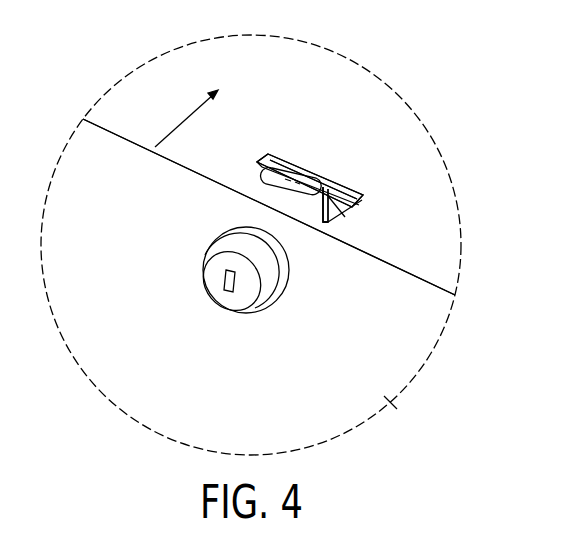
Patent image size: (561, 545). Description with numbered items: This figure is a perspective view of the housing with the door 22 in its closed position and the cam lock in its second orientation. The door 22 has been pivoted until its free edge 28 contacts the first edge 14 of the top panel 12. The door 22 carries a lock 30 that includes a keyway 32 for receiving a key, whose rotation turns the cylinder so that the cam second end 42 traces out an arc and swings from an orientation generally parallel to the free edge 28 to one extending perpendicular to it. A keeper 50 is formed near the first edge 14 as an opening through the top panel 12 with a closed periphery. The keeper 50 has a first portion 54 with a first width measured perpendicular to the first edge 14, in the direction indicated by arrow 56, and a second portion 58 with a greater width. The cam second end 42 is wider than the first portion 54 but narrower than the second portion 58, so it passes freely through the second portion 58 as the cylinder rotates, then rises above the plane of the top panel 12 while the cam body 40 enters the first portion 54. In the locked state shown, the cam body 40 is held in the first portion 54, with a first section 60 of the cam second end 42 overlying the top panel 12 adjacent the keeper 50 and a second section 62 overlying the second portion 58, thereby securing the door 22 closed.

The top panel 12 is at (452, 205).
The first edge 14 is at (380, 258).
The door 22 is at (390, 402).
The free edge 28 is at (410, 277).
The lock 30 is at (245, 335).
The keyway 32 is at (226, 277).
The cam body 40 is at (312, 213).
The cam second end 42 is at (310, 175).
The keeper 50 is at (325, 142).
The first portion 54 is at (275, 148).
The arrow 56 is at (173, 127).
The second portion 58 is at (355, 188).
The first section 60 is at (265, 178).
The second section 62 is at (335, 213).